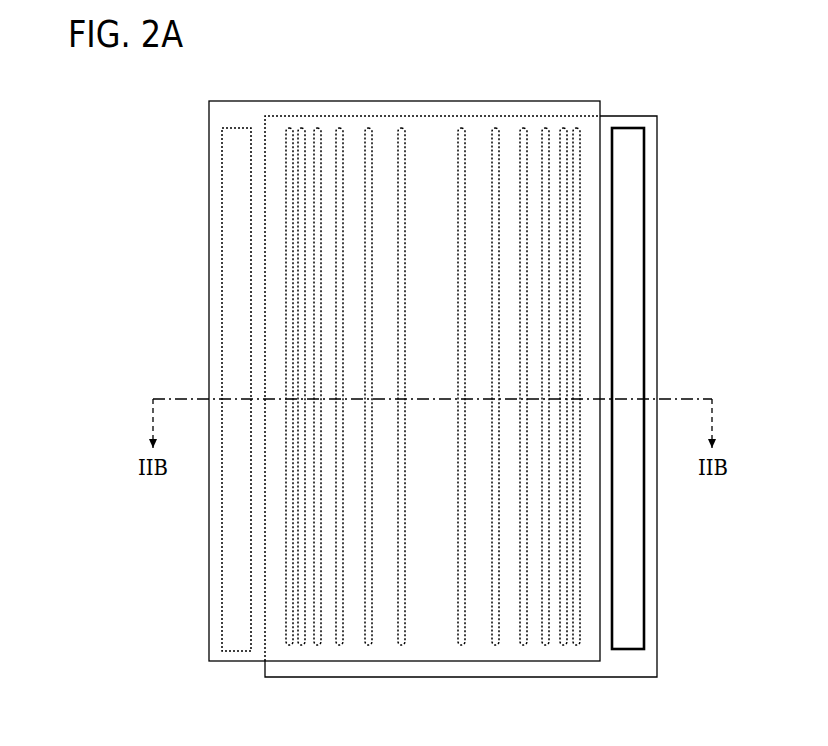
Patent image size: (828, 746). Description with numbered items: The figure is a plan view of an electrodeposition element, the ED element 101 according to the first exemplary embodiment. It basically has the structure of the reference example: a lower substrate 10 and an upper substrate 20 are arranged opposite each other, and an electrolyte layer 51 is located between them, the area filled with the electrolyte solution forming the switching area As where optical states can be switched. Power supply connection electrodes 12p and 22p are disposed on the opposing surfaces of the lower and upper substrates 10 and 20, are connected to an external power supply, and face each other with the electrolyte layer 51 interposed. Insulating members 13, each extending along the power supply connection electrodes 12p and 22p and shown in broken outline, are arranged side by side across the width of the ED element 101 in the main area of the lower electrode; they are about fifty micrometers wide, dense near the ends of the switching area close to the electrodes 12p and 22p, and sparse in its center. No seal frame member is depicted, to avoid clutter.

The lower substrate 10 is at (657, 158).
The power supply connection electrode 12p is at (628, 232).
The insulating members 13 is at (318, 135).
The upper substrate 20 is at (209, 160).
The power supply connection electrode 22p is at (240, 228).
The electrolyte layer 51 is at (432, 175).
The ED element 101 is at (732, 728).